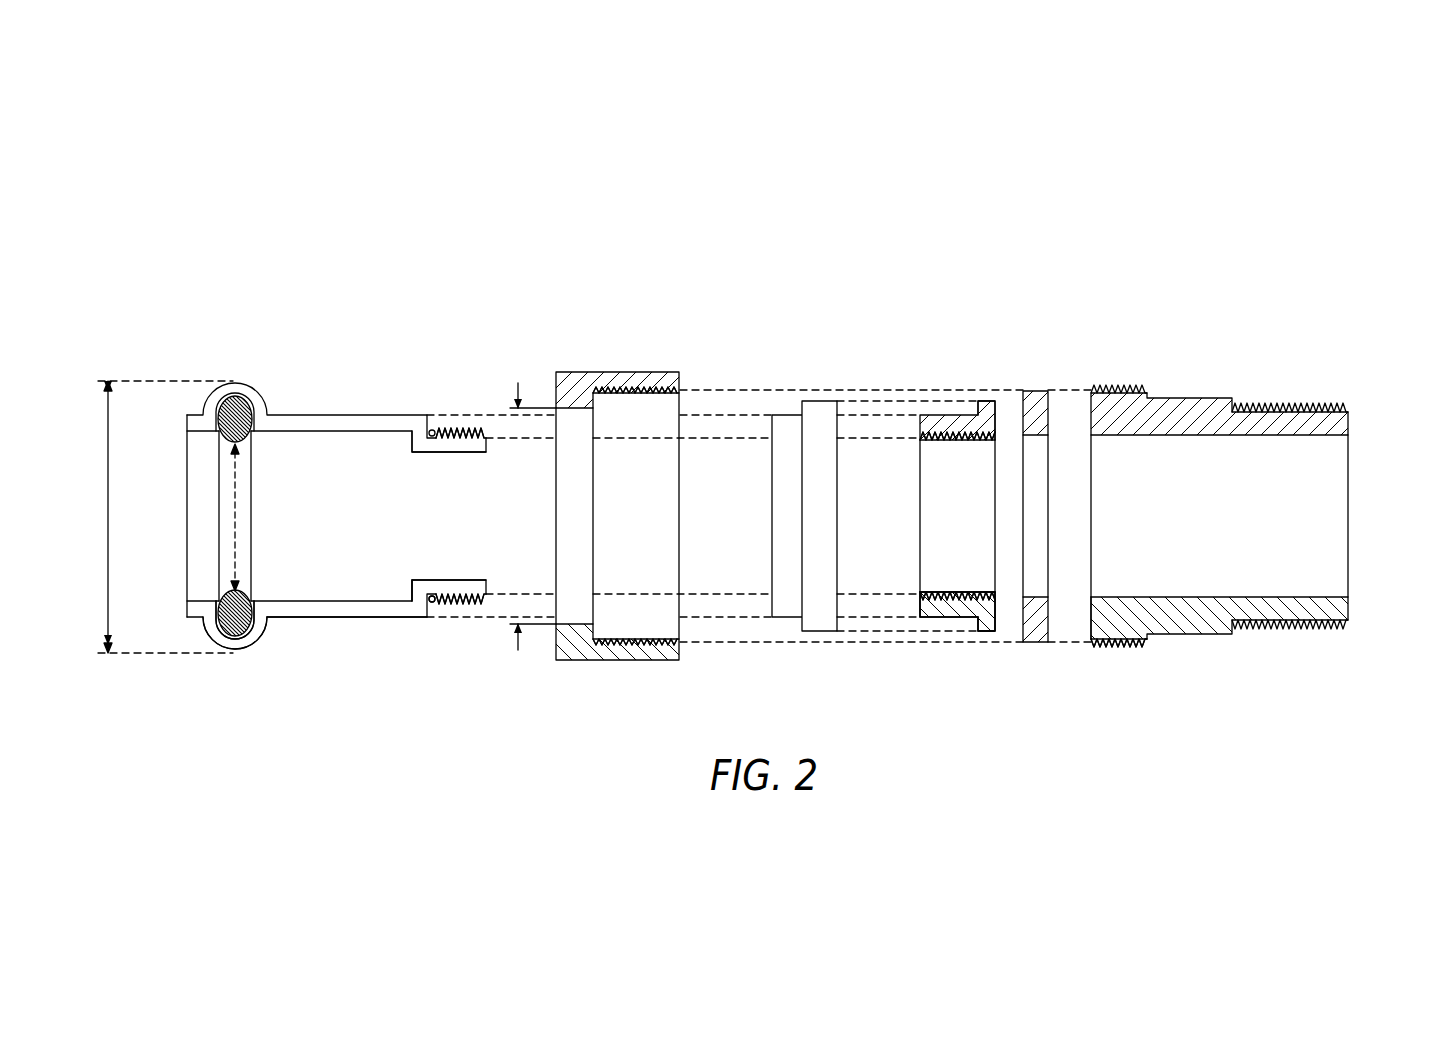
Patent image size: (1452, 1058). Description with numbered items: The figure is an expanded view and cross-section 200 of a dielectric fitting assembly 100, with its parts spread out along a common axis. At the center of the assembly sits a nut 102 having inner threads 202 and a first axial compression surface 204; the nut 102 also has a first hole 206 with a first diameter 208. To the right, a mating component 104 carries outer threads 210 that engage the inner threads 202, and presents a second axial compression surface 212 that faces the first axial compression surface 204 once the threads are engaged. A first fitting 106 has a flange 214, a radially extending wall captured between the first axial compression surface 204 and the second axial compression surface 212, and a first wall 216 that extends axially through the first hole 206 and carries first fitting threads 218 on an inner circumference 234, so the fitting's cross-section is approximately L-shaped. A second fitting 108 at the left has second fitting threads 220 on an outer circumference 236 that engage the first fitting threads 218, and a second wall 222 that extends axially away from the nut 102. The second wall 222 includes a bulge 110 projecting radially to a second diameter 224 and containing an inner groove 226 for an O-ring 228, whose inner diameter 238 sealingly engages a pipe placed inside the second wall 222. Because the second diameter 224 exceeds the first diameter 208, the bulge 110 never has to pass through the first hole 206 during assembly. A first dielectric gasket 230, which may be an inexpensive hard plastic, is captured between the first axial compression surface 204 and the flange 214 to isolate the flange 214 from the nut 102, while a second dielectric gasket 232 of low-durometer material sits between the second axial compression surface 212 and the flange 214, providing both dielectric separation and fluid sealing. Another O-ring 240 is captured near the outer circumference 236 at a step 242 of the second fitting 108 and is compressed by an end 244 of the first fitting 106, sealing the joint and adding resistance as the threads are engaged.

The dielectric fitting assembly 100 is at (1355, 284).
The nut 102 is at (577, 372).
The mating component 104 is at (1197, 633).
The first fitting 106 is at (985, 401).
The second fitting 108 is at (335, 415).
The bulge 110 is at (235, 381).
The cross-section 200 is at (1165, 291).
The inner threads 202 is at (652, 394).
The first axial compression surface 204 is at (597, 634).
The first hole 206 is at (542, 577).
The first diameter 208 is at (516, 390).
The outer threads 210 is at (1115, 647).
The second axial compression surface 212 is at (1088, 623).
The flange 214 is at (973, 622).
The first wall 216 is at (947, 415).
The first fitting threads 218 is at (930, 578).
The second fitting threads 220 is at (455, 428).
The second wall 222 is at (330, 617).
The second diameter 224 is at (163, 517).
The inner groove 226 is at (260, 630).
The O-ring 228 is at (230, 643).
The first dielectric gasket 230 is at (783, 415).
The second dielectric gasket 232 is at (1037, 391).
The inner circumference 234 is at (962, 583).
The outer circumference 236 is at (457, 608).
The inner diameter 238 is at (233, 503).
The O-ring 240 is at (433, 603).
The step 242 is at (412, 582).
The end 244 is at (920, 603).